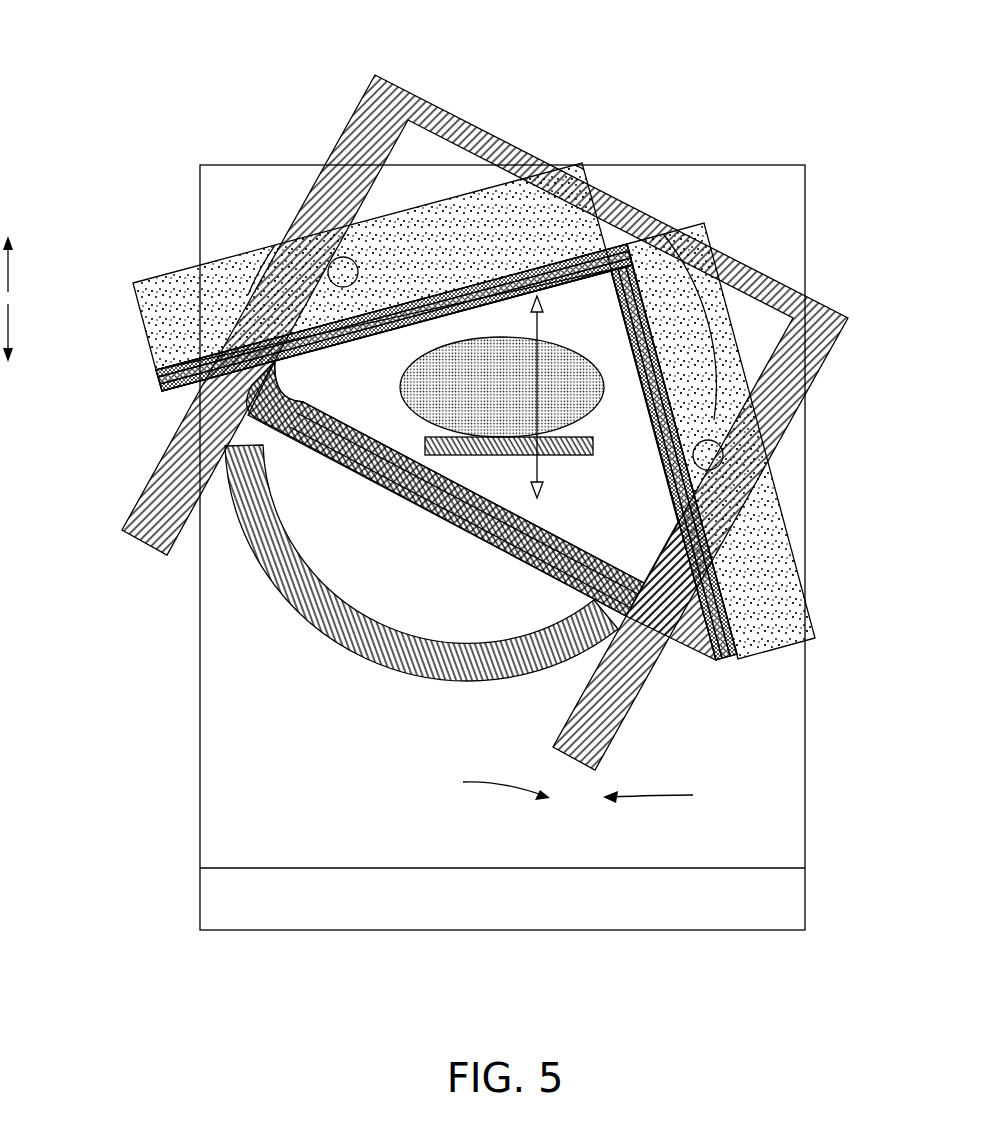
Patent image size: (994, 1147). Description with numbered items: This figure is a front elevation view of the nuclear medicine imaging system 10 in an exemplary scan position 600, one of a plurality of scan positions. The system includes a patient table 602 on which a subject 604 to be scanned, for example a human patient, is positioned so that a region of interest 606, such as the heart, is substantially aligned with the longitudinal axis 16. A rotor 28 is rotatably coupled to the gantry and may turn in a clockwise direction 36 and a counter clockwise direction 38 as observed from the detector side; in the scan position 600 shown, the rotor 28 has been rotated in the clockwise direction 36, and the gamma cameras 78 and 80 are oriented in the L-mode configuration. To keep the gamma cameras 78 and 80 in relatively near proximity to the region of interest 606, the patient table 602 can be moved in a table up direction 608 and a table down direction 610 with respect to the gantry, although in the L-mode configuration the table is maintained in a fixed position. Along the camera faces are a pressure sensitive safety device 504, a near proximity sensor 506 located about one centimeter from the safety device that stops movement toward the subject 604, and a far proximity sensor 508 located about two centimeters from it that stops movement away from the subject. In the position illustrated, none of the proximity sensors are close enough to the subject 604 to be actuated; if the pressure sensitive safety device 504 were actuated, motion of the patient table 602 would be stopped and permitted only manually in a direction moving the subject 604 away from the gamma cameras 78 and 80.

The nuclear medicine imaging system 10 is at (265, 58).
The longitudinal axis 16 is at (459, 370).
The rotor 28 is at (424, 684).
The clockwise direction 36 is at (667, 798).
The counter clockwise direction 38 is at (486, 784).
The gamma camera 78 is at (567, 177).
The gamma camera 80 is at (790, 597).
The pressure sensitive safety device 504 is at (163, 375).
The near proximity sensor 506 is at (167, 388).
The far proximity sensor 508 is at (176, 398).
The scan position 600 is at (655, 190).
The patient table 602 is at (583, 457).
The subject 604 is at (503, 386).
The region of interest 606 is at (459, 386).
The table up direction 608 is at (10, 268).
The table down direction 610 is at (10, 332).